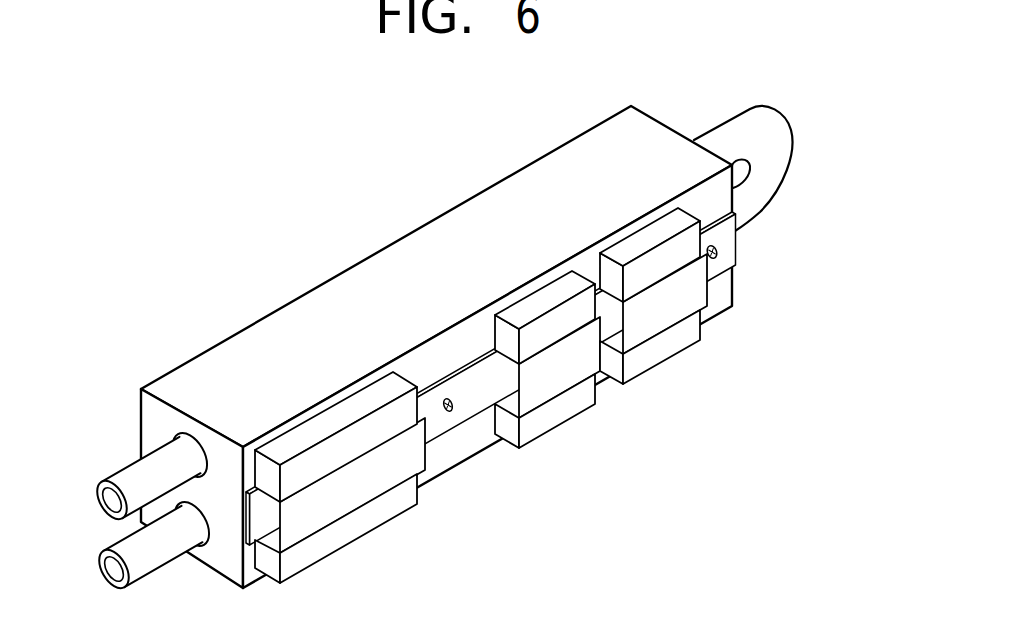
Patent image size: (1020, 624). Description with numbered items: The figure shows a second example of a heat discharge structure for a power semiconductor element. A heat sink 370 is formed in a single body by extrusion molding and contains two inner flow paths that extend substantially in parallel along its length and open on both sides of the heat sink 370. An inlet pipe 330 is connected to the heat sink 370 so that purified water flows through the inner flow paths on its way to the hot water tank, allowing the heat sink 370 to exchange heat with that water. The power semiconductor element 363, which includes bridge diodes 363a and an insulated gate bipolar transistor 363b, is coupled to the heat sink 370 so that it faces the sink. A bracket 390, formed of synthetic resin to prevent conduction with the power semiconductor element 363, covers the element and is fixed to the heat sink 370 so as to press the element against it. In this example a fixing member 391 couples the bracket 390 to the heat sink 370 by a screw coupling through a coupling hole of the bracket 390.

The inlet pipe 330 is at (127, 481).
The power semiconductor element 363 is at (678, 457).
The bridge diodes 363a is at (398, 498).
The insulated gate bipolar transistor 363b is at (630, 362).
The heat sink 370 is at (565, 172).
The bracket 390 is at (562, 360).
The fixing member 391 is at (444, 398).